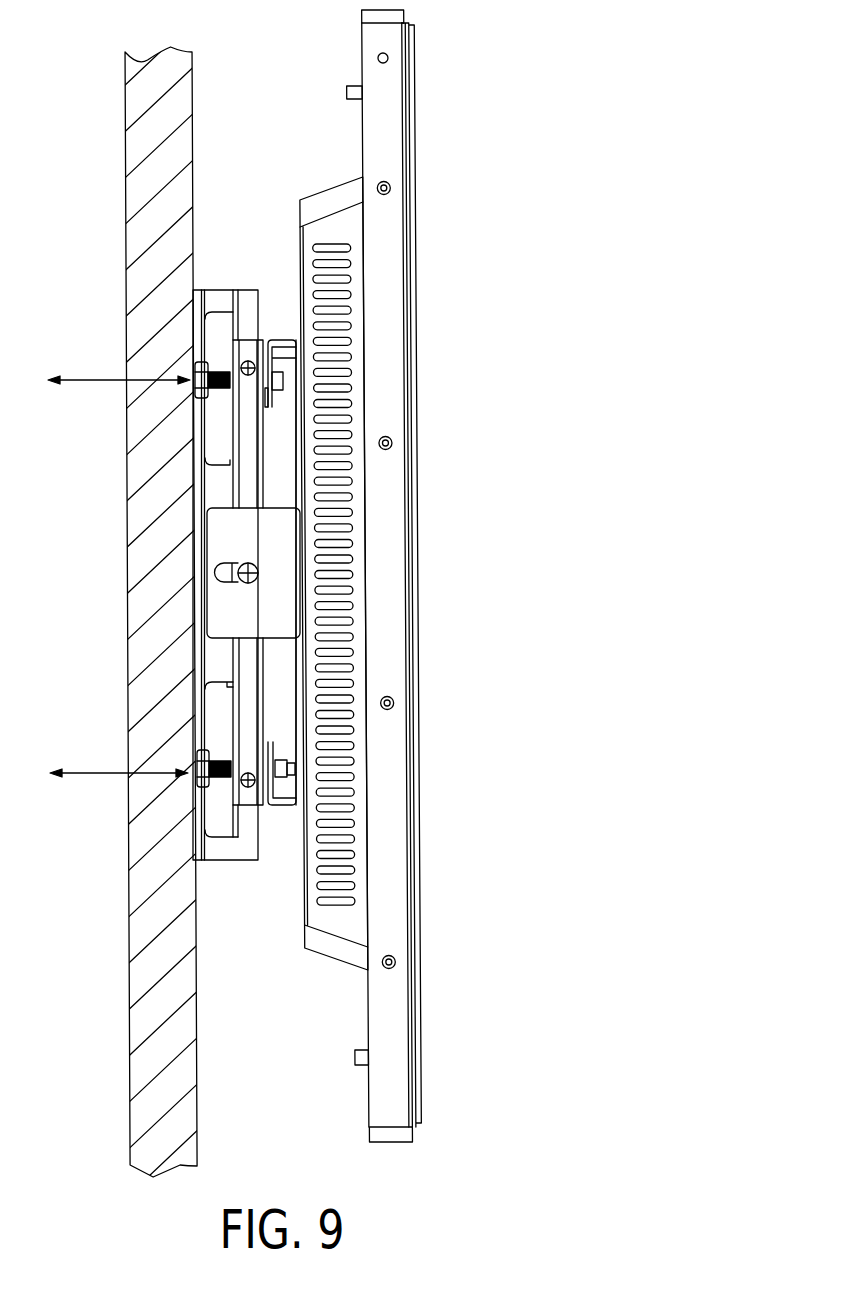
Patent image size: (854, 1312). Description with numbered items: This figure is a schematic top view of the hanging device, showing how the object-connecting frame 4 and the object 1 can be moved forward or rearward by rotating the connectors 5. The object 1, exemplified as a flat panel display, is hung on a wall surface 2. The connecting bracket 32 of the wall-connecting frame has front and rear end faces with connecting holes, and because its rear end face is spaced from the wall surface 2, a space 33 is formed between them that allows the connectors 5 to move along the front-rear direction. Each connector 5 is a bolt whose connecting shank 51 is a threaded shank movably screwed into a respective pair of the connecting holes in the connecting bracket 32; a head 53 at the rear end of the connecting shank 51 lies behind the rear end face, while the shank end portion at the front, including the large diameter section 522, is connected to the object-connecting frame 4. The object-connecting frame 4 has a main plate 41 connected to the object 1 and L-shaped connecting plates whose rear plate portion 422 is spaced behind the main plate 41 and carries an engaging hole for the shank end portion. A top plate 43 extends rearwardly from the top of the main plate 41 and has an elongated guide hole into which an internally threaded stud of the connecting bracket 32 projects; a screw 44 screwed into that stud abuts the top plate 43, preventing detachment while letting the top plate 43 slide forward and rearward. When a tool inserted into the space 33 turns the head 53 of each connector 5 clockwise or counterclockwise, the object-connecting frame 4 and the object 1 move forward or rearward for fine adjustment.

The object 1 is at (388, 250).
The wall surface 2 is at (192, 97).
The connecting bracket 32 is at (247, 330).
The space 33 is at (217, 832).
The object-connecting frame 4 is at (263, 559).
The main plate 41 is at (298, 455).
The rear plate portion 422 is at (267, 388).
The top plate 43 is at (275, 550).
The screw 44 is at (258, 580).
The connector 5 is at (139, 748).
The connecting shank 51 is at (220, 788).
The large diameter section 522 is at (281, 775).
The head 53 is at (197, 760).